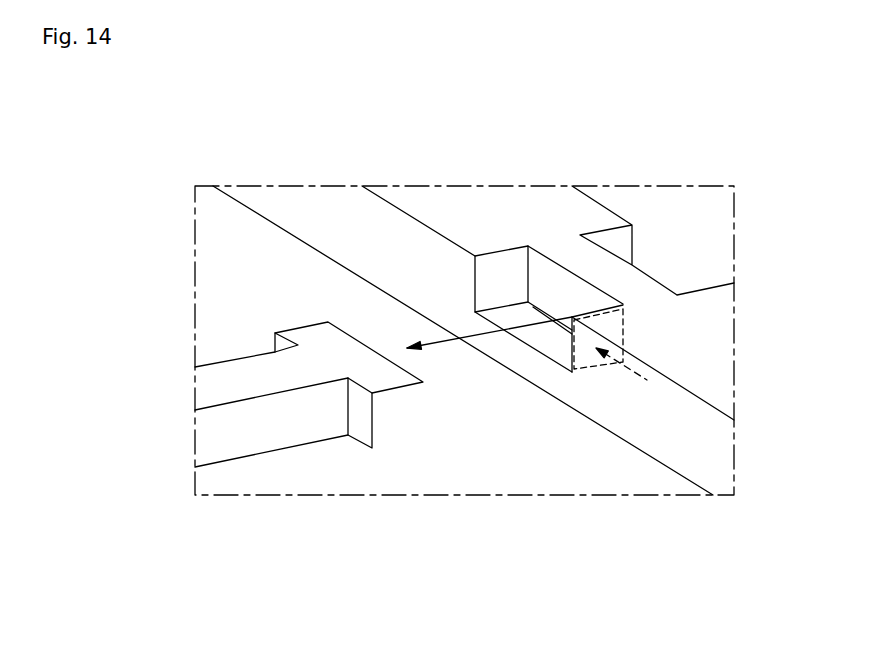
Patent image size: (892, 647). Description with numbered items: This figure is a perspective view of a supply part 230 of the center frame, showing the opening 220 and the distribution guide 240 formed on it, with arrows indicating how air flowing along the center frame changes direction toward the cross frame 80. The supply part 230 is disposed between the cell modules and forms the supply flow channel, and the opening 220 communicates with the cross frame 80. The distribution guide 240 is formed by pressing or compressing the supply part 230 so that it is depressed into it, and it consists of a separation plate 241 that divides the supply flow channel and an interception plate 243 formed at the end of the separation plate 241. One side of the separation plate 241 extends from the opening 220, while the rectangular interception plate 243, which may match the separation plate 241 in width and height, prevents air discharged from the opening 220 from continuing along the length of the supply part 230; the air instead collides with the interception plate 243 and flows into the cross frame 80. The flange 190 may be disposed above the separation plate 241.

The cross frame 80 is at (223, 381).
The flange 190 is at (323, 335).
The opening 220 is at (588, 364).
The supply part 230 is at (495, 213).
The distribution guide 240 is at (493, 578).
The separation plate 241 is at (547, 340).
The interception plate 243 is at (495, 292).